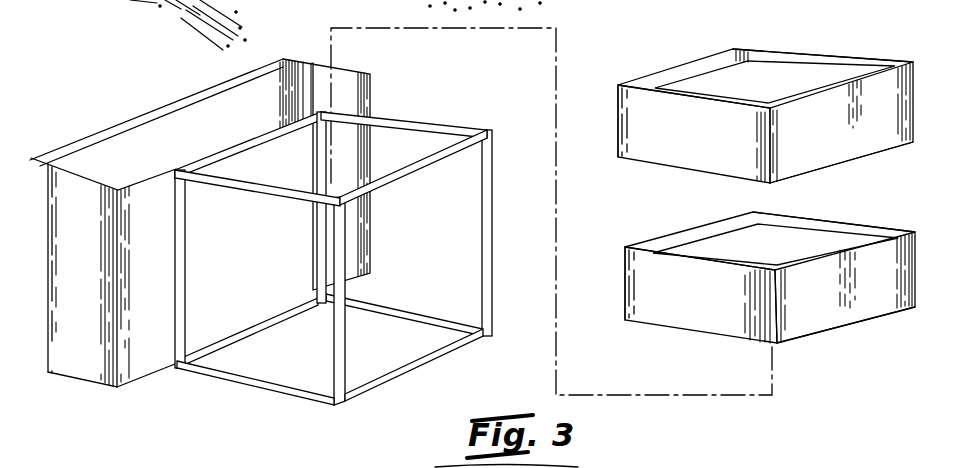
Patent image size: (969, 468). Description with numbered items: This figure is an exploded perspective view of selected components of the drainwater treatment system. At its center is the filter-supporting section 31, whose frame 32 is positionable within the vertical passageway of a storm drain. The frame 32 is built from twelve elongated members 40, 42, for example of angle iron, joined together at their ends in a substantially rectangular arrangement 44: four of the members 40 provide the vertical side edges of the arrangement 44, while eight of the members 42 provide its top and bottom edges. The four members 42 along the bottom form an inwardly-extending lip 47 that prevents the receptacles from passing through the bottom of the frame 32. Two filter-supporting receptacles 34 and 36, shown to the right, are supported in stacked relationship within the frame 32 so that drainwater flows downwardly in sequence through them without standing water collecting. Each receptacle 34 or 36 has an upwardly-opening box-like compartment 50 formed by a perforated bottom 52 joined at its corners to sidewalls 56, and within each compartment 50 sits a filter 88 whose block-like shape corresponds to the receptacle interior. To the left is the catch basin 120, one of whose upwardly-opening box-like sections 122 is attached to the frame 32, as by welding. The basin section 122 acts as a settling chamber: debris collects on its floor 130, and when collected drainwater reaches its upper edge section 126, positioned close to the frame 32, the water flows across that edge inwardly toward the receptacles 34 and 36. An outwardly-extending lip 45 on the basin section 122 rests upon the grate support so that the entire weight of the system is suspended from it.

The catch basin 120 is at (200, 228).
The catch basin section 122 is at (160, 140).
The outwardly-extending lip 45 is at (260, 72).
The floor 130 is at (147, 378).
The upper edge section 126 is at (243, 142).
The elongated member 42 is at (233, 177).
The elongated member 40 is at (186, 270).
The rectangular arrangement 44 is at (493, 170).
The inwardly-extending lip 47 is at (267, 330).
The filter-supporting section 31 is at (317, 406).
The frame 32 is at (380, 387).
The filter-supporting receptacle 34 is at (923, 68).
The filter-supporting receptacle 36 is at (920, 278).
The box-like compartment 50 is at (628, 118).
The sidewall 56 is at (657, 133).
The bottom 52 is at (827, 166).
The filter 88 is at (817, 50).